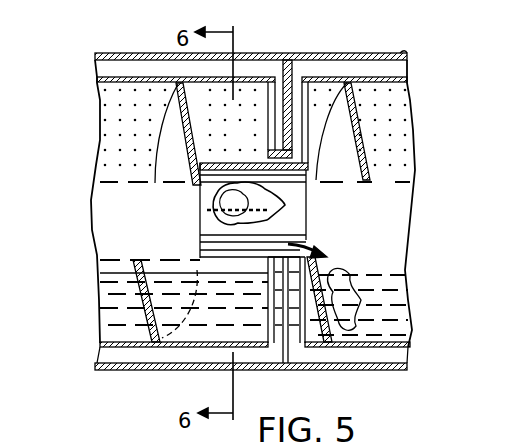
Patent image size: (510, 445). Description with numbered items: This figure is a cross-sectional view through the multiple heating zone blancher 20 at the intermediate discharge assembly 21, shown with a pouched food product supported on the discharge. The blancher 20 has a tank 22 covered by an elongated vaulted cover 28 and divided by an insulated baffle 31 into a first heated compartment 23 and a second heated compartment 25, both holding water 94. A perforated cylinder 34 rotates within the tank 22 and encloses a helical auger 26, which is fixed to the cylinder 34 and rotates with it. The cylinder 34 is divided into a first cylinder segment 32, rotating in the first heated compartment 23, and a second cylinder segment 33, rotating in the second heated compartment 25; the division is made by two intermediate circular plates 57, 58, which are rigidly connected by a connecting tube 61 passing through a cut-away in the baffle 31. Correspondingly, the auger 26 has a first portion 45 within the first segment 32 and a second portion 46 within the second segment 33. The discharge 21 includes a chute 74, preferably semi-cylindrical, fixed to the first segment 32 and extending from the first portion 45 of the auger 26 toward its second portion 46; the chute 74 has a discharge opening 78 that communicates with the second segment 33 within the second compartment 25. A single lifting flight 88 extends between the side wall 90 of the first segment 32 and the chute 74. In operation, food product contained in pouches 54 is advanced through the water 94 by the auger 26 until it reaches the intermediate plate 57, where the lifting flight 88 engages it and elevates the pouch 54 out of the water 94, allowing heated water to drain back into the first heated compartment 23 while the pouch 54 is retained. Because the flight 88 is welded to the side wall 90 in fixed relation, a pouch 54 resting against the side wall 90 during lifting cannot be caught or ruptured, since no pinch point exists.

The multiple heating zone blancher 20 is at (436, 124).
The intermediate discharge assembly 21 is at (208, 153).
The tank 22 is at (412, 353).
The first heated compartment 23 is at (100, 362).
The second heated compartment 25 is at (408, 363).
The helical auger 26 is at (370, 133).
The elongated vaulted cover 28 is at (383, 53).
The insulated baffle 31 is at (283, 350).
The first cylinder segment 32 is at (128, 86).
The second cylinder segment 33 is at (412, 213).
The perforated cylinder 34 is at (100, 140).
The first portion of the auger 45 is at (155, 153).
The second portion of the auger 46 is at (370, 163).
The pouch 54 is at (197, 185).
The intermediate circular plate 57 is at (268, 130).
The intermediate circular plate 58 is at (312, 88).
The connecting tube 61 is at (306, 160).
The chute 74 is at (200, 262).
The discharge opening 78 is at (306, 193).
The lifting flight 88 is at (244, 223).
The side wall 90 is at (147, 93).
The water 94 is at (402, 300).